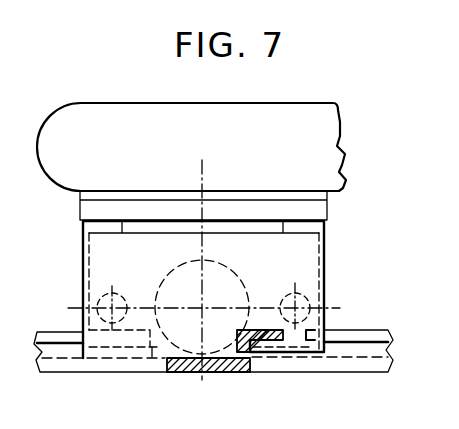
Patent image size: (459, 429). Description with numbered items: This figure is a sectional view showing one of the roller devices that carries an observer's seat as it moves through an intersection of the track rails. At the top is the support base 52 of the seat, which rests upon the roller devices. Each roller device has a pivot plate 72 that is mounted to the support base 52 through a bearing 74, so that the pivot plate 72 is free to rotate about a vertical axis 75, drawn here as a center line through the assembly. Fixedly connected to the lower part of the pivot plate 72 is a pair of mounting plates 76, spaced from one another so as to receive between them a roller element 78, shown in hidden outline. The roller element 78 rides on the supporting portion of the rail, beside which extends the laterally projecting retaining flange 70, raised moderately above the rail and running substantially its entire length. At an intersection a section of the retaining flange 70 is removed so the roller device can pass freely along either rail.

The support base 52 is at (348, 118).
The retaining flange 70 is at (371, 335).
The pivot plate 72 is at (327, 206).
The bearing 74 is at (302, 197).
The vertical axis 75 is at (202, 177).
The mounting plates 76 is at (308, 257).
The roller element 78 is at (232, 270).